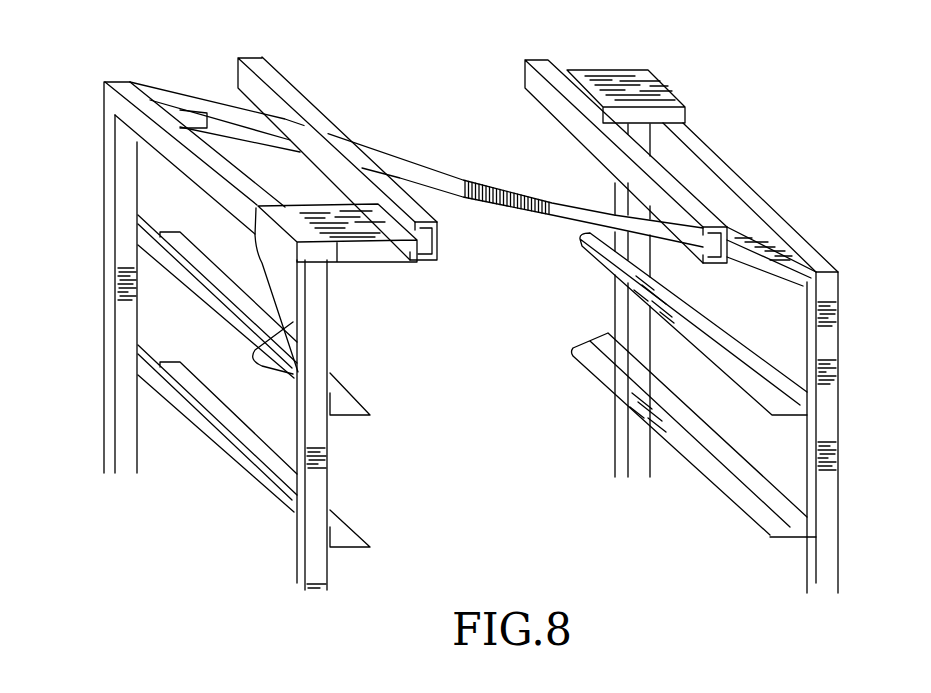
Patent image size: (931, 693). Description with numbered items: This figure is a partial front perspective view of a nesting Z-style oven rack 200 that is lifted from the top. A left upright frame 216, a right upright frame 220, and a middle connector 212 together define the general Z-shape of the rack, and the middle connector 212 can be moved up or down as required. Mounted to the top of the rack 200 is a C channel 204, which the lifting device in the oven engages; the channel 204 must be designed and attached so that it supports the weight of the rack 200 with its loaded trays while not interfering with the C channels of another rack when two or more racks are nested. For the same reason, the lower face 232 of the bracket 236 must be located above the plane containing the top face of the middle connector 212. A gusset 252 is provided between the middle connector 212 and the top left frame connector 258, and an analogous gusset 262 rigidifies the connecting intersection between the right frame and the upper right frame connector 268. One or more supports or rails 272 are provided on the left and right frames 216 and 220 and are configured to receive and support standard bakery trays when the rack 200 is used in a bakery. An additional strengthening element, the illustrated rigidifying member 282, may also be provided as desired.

The oven rack 200 is at (217, 545).
The C channel 204 is at (288, 93).
The middle connector 212 is at (397, 153).
The left upright frame 216 is at (104, 105).
The right upright frame 220 is at (756, 178).
The lower face of bracket 232 is at (367, 262).
The bracket 236 is at (345, 263).
The gusset 252 is at (167, 112).
The top left frame connector 258 is at (167, 153).
The gusset 262 is at (793, 228).
The upper right frame connector 268 is at (703, 134).
The supports or rails 272 is at (747, 503).
The rigidifying member 282 is at (300, 377).